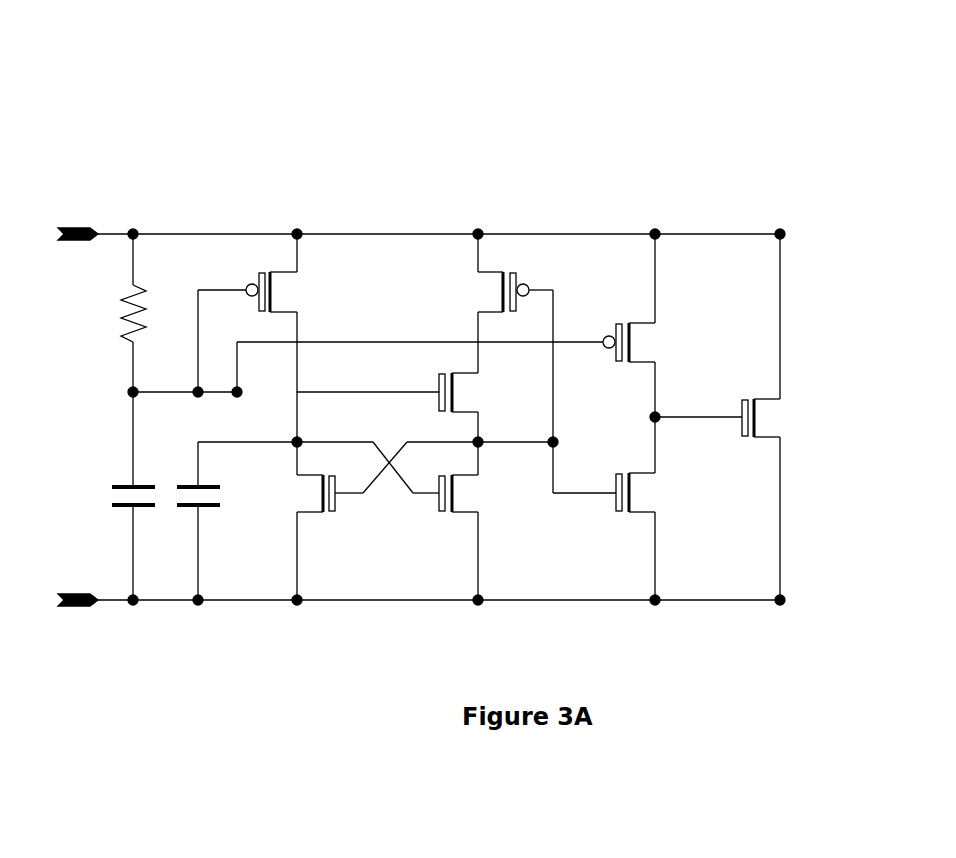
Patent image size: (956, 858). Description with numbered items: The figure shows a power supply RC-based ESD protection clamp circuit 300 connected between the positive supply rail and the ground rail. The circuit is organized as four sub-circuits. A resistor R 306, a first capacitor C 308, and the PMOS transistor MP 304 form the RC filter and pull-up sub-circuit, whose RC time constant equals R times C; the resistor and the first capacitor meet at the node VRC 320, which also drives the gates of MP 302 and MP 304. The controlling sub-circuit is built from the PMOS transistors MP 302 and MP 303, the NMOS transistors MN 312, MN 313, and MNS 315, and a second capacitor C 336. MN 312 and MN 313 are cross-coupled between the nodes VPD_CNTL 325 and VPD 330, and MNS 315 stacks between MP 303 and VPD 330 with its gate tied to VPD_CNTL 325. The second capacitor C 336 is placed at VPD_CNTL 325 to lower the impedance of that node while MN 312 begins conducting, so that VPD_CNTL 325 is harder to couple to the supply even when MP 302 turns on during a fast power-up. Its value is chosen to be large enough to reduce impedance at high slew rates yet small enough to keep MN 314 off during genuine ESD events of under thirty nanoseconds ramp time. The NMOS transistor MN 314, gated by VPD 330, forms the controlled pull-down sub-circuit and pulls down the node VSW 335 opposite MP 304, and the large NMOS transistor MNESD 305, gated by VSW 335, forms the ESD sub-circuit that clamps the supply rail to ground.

The power supply RC-based ESD protection clamp circuit 300 is at (613, 88).
The resistor R 306 is at (112, 313).
The VRC 320 is at (159, 357).
The first capacitor C 308 is at (112, 496).
The second capacitor C 336 is at (237, 521).
The transistor MP 302 is at (276, 338).
The transistor MP 303 is at (485, 338).
The transistor MP 304 is at (475, 325).
The transistor MNS 315 is at (409, 407).
The VPD_CNTL 325 is at (299, 440).
The VPD 330 is at (487, 454).
The transistor MN 312 is at (301, 521).
The transistor MN 313 is at (476, 521).
The transistor MN 314 is at (635, 508).
The VSW 335 is at (696, 418).
The transistor MNESD 305 is at (791, 425).